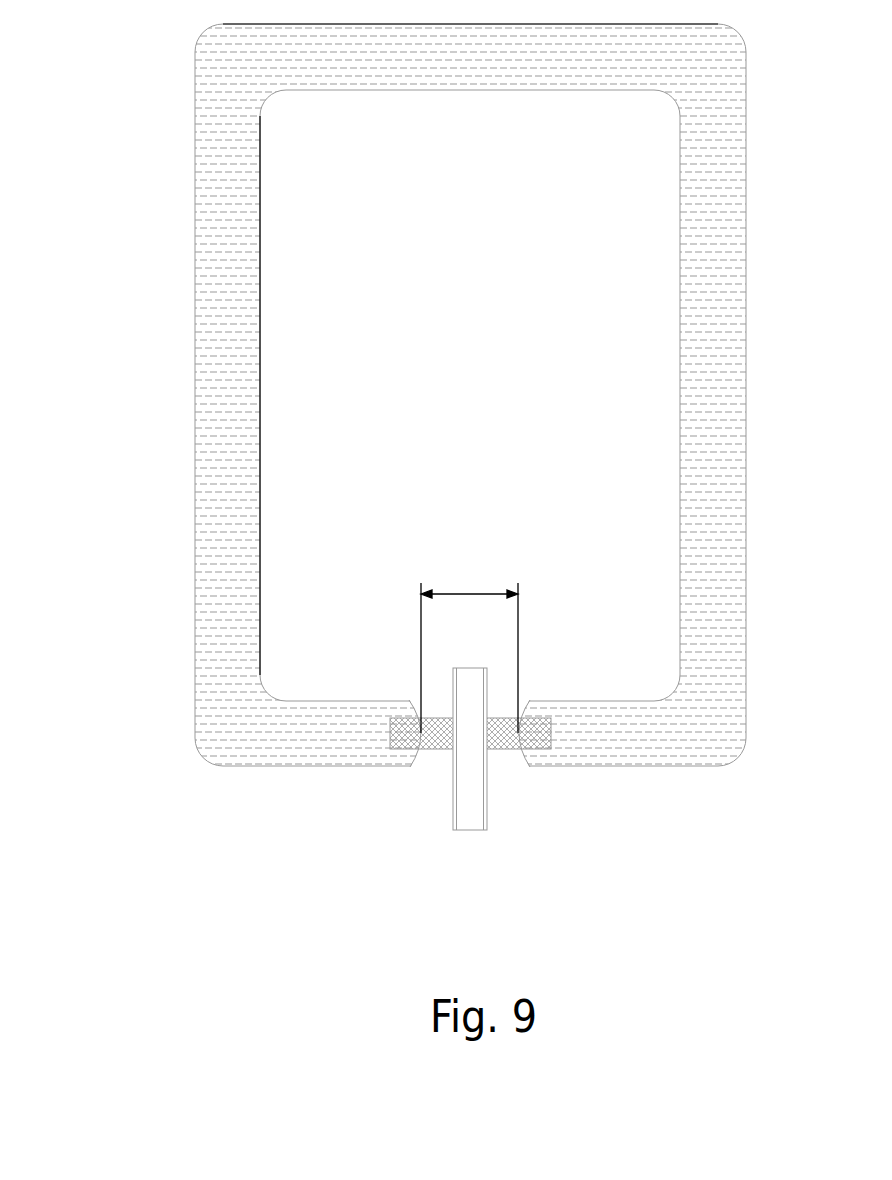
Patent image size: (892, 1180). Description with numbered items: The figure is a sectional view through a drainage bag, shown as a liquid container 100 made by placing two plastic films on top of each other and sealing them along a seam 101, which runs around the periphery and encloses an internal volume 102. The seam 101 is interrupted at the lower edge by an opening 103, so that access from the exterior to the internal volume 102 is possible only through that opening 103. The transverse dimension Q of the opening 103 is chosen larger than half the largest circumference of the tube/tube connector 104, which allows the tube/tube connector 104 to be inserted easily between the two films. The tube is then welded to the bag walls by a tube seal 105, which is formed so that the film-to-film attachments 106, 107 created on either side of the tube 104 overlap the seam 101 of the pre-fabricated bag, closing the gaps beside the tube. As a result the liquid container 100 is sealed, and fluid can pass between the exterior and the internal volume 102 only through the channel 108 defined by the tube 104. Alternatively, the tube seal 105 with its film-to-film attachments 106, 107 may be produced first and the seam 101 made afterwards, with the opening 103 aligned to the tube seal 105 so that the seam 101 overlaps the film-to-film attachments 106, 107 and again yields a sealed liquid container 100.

The liquid container 100 is at (393, 471).
The seam 101 is at (215, 317).
The internal volume 102 is at (440, 355).
The opening 103 is at (446, 758).
The tube/tube connector 104 is at (488, 788).
The tube seal 105 is at (500, 735).
The film-to-film attachment 106 is at (540, 735).
The film-to-film attachment 107 is at (400, 735).
The channel 108 is at (470, 810).